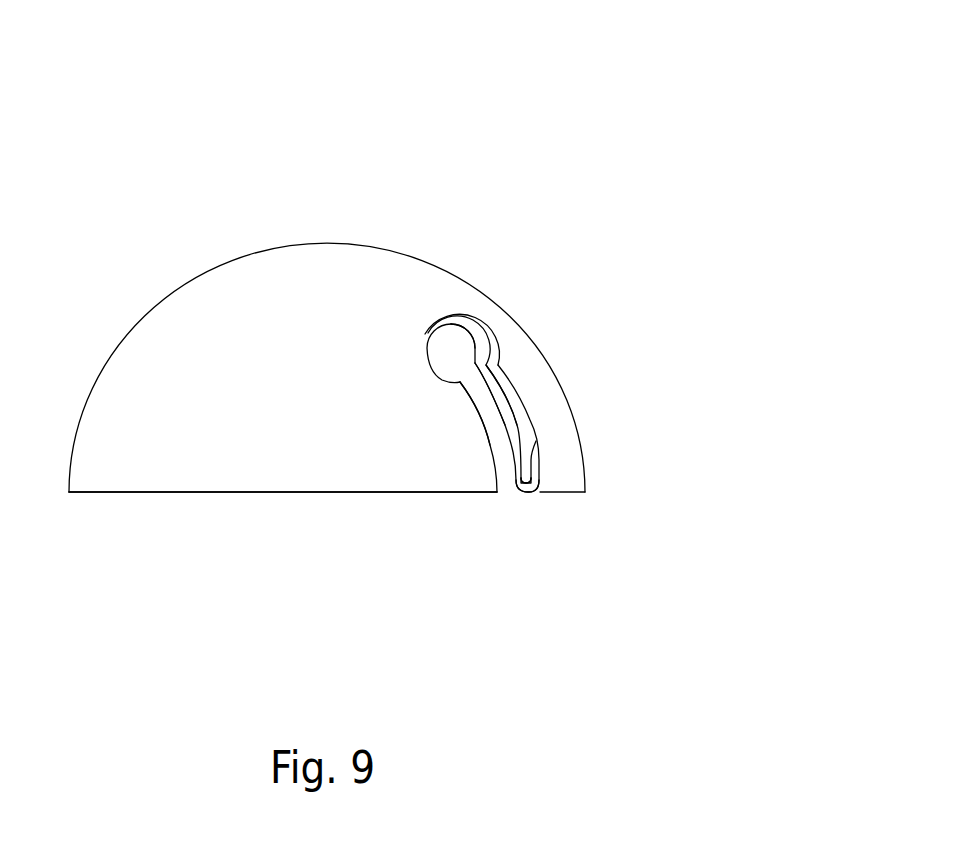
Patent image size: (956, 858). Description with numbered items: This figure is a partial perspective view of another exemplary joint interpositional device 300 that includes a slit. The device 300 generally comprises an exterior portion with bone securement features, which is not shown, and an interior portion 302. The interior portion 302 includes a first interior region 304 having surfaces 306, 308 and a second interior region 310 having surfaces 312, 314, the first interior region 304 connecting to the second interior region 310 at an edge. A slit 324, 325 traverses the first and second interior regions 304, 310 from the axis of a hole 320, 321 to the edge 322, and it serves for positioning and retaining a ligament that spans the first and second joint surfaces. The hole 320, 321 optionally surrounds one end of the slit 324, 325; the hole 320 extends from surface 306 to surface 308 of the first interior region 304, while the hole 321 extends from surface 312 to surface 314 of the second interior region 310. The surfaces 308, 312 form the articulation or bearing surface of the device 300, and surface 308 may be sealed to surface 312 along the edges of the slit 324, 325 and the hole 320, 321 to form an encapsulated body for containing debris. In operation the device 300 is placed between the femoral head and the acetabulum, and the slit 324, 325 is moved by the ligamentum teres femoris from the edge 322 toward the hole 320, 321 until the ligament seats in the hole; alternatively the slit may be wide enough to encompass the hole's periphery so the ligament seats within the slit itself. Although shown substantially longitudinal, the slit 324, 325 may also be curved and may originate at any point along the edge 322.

The joint interpositional device 300 is at (583, 137).
The interior portion 302 is at (520, 353).
The first interior region 304 is at (523, 418).
The surface of first interior region 306 is at (542, 465).
The surface of first interior region 308 is at (518, 431).
The surface of second interior region 312 is at (475, 413).
The second interior region 310 is at (493, 392).
The surface of second interior region 314 is at (493, 410).
The hole 320 is at (455, 347).
The hole 321 is at (463, 336).
The edge 322 is at (250, 495).
The slit 324 is at (508, 468).
The slit 325 is at (526, 480).